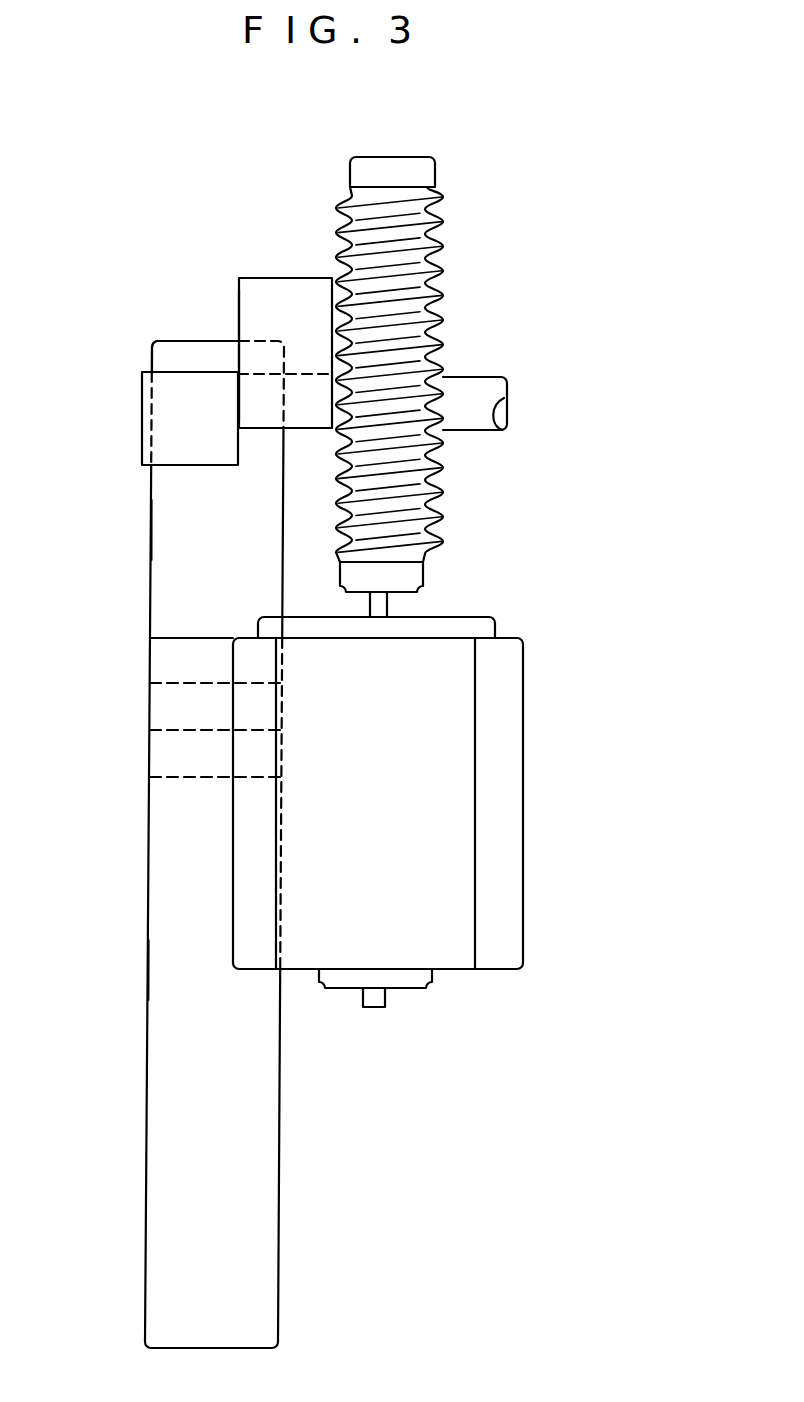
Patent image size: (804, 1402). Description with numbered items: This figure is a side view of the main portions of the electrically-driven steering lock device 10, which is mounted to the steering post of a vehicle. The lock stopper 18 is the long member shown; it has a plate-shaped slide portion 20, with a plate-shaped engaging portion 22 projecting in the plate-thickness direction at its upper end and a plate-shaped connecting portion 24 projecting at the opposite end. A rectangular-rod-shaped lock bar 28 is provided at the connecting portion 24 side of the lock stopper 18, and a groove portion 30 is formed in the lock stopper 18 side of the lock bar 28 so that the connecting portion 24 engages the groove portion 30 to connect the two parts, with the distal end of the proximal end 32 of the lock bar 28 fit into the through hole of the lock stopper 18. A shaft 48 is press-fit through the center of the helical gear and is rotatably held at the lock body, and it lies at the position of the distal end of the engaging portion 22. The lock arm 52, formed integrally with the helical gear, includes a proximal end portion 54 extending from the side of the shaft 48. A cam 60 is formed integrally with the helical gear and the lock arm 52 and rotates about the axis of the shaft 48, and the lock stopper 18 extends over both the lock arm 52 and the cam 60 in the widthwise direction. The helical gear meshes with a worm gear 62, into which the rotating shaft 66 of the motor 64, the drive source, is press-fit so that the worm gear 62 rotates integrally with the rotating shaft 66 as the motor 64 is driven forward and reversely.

The electrically-driven steering lock device 10 is at (608, 183).
The lock stopper 18 is at (150, 527).
The slide portion 20 is at (160, 573).
The engaging portion 22 is at (160, 357).
The connecting portion 24 is at (160, 705).
The lock bar 28 is at (147, 967).
The groove portion 30 is at (182, 777).
The proximal end 32 is at (165, 652).
The shaft 48 is at (490, 377).
The lock arm 52 is at (238, 298).
The proximal end portion 54 is at (245, 322).
The cam 60 is at (143, 420).
The worm gear 62 is at (445, 292).
The motor 64 is at (510, 826).
The rotating shaft 66 is at (390, 607).